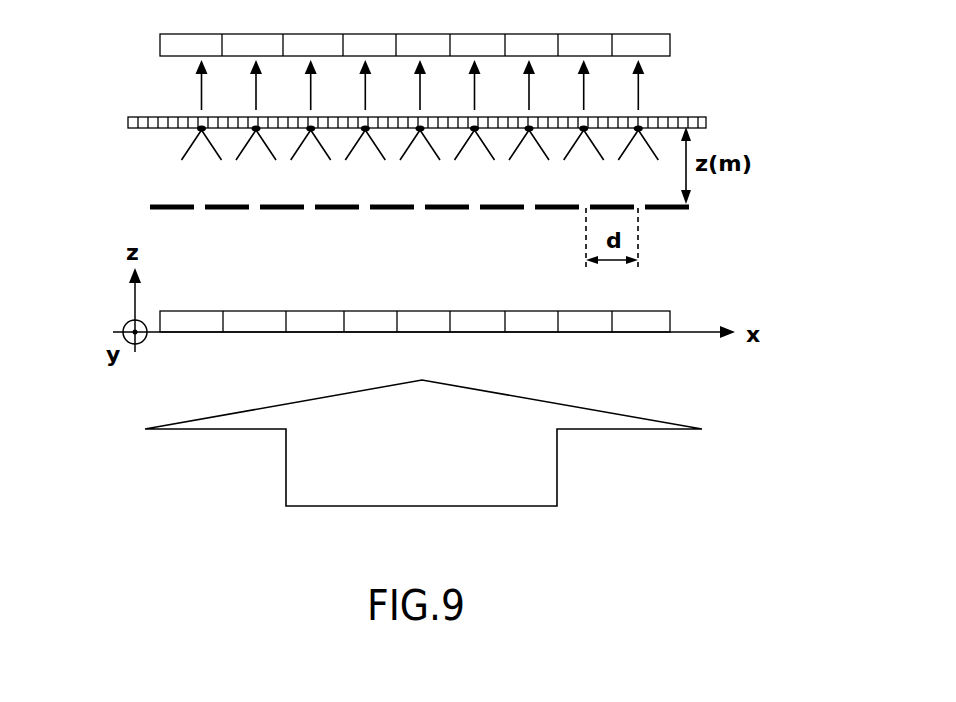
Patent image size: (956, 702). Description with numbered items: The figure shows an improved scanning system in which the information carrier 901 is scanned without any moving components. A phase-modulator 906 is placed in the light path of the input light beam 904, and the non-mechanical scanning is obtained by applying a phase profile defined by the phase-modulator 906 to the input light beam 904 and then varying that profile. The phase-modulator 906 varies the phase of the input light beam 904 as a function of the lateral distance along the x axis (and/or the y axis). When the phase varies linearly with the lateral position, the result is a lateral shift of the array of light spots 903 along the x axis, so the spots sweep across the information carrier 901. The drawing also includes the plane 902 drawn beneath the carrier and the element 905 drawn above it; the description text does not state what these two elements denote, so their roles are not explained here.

The information carrier 901 is at (707, 118).
The reproduction plane (dashed line) 902 is at (715, 200).
The array of light spots 903 is at (173, 150).
The input light beam 904 is at (286, 478).
The array of listening / measurement positions 905 is at (672, 45).
The phase-modulator 906 is at (670, 313).